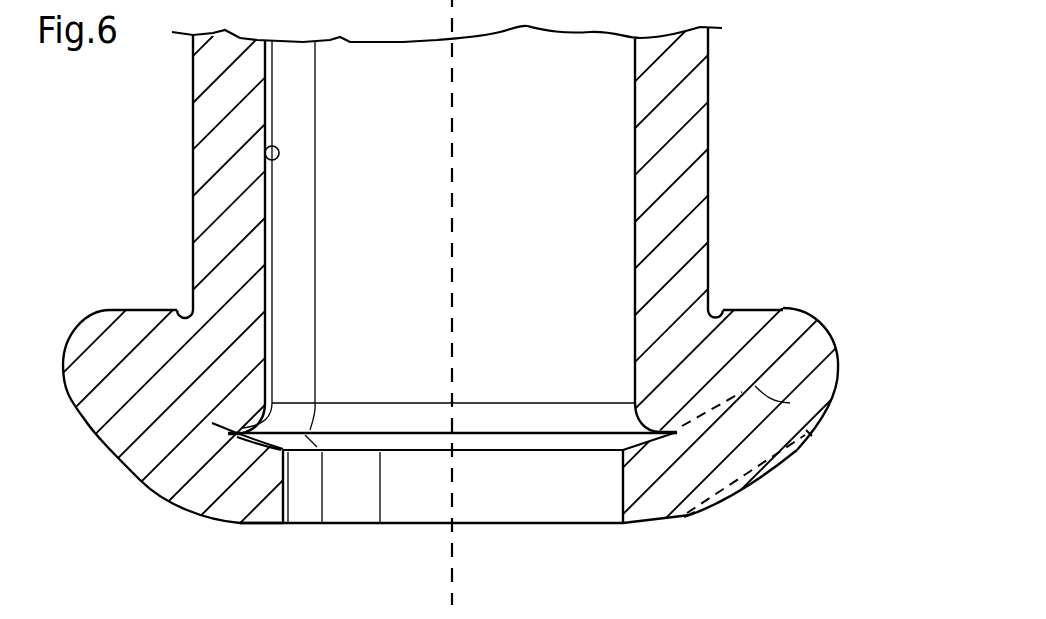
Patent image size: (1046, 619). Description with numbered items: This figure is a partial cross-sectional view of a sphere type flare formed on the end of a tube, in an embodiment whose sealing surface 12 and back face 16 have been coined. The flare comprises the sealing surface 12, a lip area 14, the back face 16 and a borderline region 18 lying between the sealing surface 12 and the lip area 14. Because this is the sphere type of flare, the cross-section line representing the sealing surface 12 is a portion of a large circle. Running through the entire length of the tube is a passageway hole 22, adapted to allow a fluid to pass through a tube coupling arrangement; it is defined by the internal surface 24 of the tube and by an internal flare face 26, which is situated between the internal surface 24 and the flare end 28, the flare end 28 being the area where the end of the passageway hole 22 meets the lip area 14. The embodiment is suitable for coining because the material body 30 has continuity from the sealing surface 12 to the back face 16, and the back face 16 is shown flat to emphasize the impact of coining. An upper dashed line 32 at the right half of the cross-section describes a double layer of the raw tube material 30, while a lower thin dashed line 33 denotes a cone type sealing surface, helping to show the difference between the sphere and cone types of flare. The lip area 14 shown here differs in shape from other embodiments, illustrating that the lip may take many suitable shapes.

The sealing surface 12 is at (770, 472).
The lip area 14 is at (659, 525).
The back face 16 is at (762, 306).
The borderline region 18 is at (690, 517).
The passageway hole 22 is at (434, 151).
The internal surface 24 is at (265, 157).
The internal flare face 26 is at (407, 423).
The flare end 28 is at (283, 523).
The material body 30 is at (752, 372).
The upper dashed line 32 is at (790, 403).
The lower thin dashed line 33 is at (789, 445).